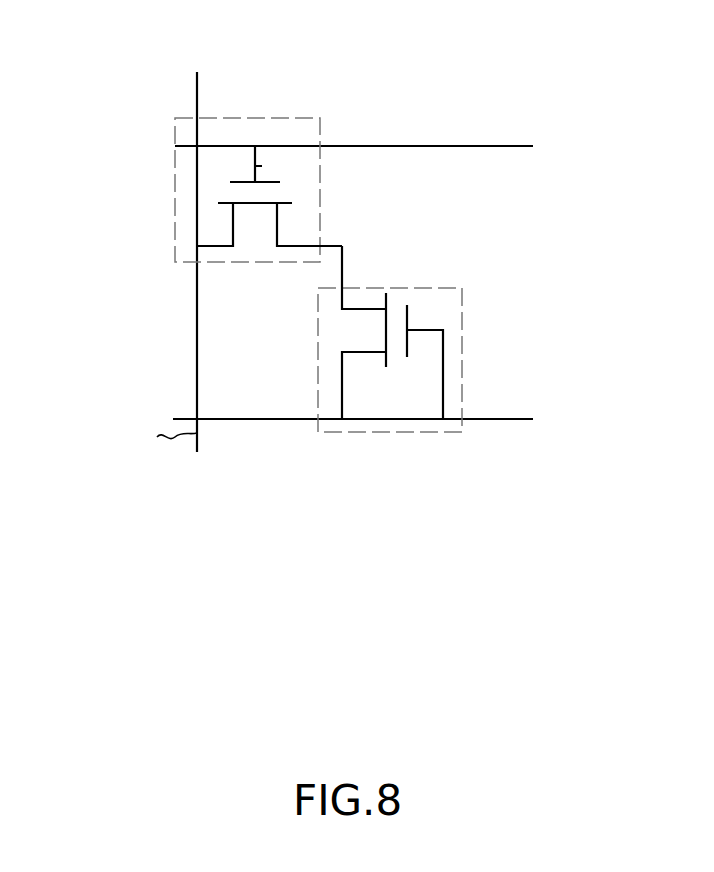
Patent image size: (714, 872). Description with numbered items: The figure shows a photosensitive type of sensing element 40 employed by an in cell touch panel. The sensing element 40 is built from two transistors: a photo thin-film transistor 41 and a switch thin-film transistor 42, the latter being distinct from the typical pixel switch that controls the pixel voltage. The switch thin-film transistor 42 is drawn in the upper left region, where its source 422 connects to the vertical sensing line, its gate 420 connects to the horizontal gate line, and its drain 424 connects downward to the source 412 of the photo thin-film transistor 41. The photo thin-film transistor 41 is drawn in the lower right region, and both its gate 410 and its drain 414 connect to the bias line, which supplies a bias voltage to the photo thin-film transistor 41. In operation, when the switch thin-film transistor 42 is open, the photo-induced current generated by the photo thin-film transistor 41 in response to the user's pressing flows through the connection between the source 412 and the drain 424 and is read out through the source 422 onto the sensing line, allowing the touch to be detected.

The photosensitive type of sensing element 40 is at (116, 84).
The switch thin-film transistor 42 is at (247, 118).
The gate 420 is at (262, 166).
The source 422 is at (215, 246).
The drain 424 is at (298, 246).
The photo thin-film transistor 41 is at (462, 320).
The source 412 is at (340, 300).
The drain 414 is at (342, 390).
The gate 410 is at (425, 330).